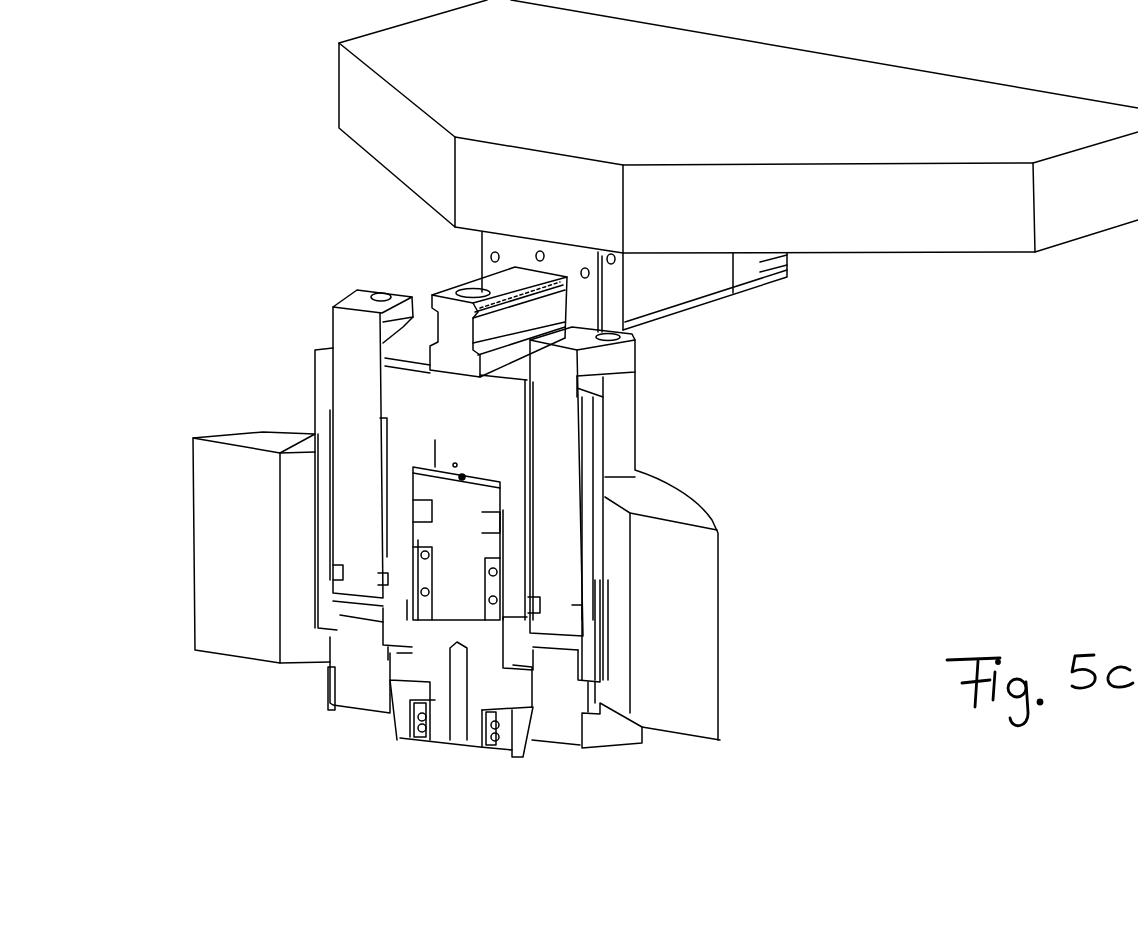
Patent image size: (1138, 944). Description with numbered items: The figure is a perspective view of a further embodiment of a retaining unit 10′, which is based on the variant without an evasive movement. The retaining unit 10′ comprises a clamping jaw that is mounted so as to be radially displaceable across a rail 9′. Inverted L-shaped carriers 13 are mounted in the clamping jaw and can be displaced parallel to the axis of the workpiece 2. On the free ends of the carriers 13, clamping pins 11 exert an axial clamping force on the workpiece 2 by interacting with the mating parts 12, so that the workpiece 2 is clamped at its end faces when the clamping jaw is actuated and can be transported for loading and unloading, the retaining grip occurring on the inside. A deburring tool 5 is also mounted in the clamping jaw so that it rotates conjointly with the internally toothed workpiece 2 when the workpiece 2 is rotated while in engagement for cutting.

The workpiece 2 is at (706, 616).
The deburring tool 5 is at (527, 745).
The rail 9′ is at (507, 278).
The retaining unit 10′ is at (922, 391).
The clamping pins 11 is at (618, 423).
The mating parts 12 is at (618, 735).
The inverted L-shaped carriers 13 is at (350, 350).